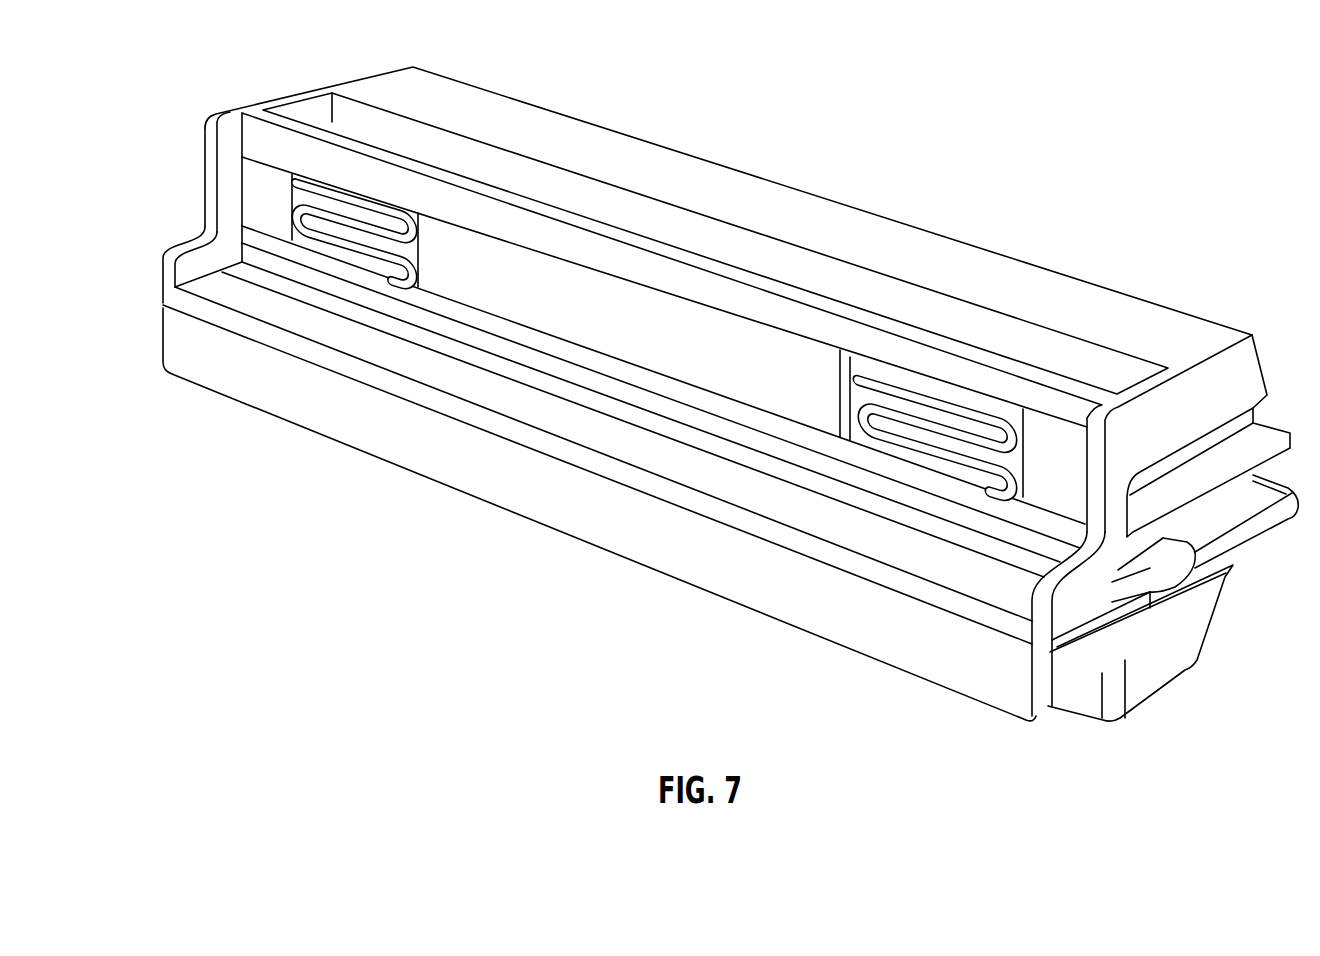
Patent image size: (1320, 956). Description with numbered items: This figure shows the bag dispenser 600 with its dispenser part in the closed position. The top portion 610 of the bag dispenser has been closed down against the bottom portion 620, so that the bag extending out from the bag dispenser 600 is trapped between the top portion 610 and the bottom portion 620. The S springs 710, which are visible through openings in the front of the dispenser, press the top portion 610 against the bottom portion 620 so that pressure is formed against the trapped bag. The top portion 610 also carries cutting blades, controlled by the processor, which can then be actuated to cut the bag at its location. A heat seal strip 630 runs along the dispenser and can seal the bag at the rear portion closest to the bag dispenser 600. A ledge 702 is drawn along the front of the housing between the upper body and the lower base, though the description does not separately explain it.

The bag dispenser 600 is at (702, 394).
The top portion 610 is at (597, 318).
The bottom portion 620 is at (675, 462).
The heat seal strip 630 is at (340, 312).
The ledge 702 is at (462, 336).
The S springs 710 is at (327, 194).